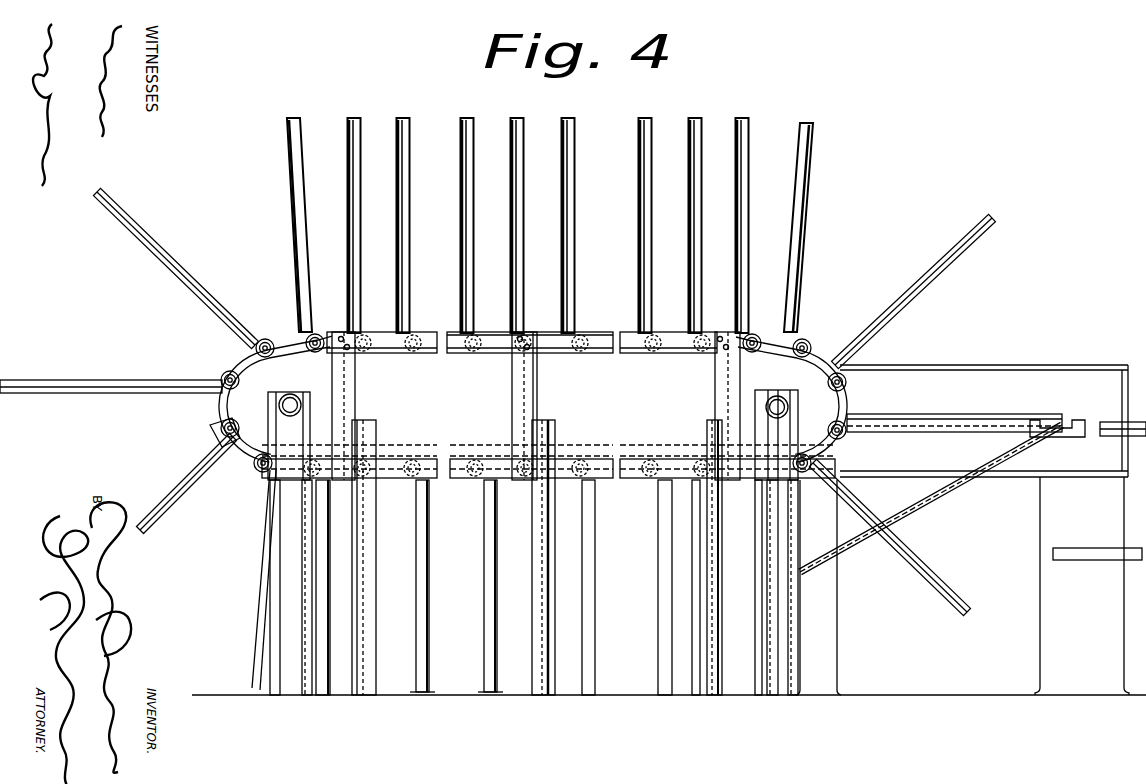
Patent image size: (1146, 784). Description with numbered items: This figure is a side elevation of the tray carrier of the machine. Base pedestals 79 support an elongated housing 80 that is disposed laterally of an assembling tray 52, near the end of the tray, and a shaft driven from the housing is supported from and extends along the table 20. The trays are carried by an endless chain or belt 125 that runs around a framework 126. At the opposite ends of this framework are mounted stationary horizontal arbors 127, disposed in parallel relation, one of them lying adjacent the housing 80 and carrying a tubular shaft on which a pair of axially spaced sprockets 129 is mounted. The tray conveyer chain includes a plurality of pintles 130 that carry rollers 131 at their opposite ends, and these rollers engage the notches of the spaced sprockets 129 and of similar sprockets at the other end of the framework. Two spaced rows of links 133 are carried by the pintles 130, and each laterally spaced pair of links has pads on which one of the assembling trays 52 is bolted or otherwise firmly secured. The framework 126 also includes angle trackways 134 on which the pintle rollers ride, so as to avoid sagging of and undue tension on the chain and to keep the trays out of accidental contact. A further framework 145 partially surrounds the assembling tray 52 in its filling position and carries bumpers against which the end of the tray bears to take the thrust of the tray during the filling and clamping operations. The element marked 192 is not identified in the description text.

The table 20 is at (1123, 415).
The assembling tray 52 is at (920, 283).
The base pedestals 79 is at (1063, 523).
The elongated housing 80 is at (998, 382).
The endless chain or belt 125 is at (251, 472).
The framework 126 is at (526, 406).
The stationary horizontal arbors 127 is at (300, 380).
The sprockets 129 is at (804, 378).
The pintles 130 is at (227, 425).
The rollers 131 is at (222, 438).
The links 133 is at (790, 306).
The angle trackways 134 is at (600, 345).
The framework 145 is at (1036, 422).
The roller 192 is at (260, 381).